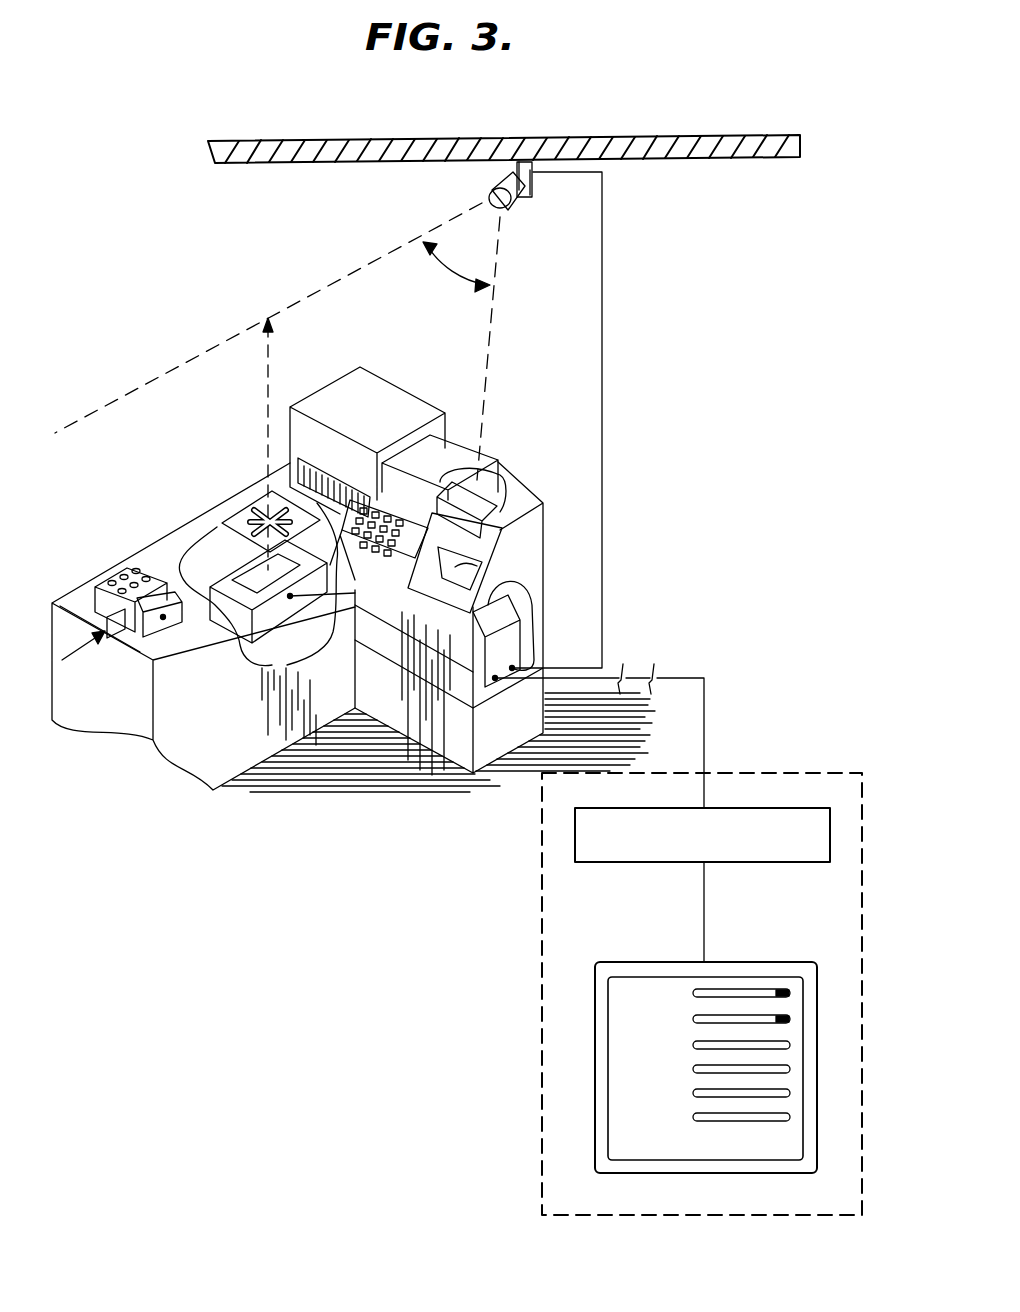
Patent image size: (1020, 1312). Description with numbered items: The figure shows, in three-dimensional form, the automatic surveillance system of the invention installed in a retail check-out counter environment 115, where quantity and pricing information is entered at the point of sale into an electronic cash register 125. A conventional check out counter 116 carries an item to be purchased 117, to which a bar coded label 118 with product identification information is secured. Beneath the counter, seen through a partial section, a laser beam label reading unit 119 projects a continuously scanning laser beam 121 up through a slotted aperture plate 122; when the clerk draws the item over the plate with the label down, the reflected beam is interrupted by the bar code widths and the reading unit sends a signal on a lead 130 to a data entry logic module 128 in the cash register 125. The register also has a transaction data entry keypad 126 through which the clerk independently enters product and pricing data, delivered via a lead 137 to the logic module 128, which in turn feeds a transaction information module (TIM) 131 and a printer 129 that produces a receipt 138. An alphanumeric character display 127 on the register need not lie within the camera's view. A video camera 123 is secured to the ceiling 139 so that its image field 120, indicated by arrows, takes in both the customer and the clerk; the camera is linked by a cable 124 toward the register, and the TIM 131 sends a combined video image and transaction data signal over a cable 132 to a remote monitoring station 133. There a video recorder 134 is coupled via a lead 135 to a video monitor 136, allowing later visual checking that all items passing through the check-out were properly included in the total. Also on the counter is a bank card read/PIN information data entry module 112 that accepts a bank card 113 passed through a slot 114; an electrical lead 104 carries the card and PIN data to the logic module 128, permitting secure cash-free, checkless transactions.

The electrical lead 104 is at (250, 673).
The bank card read/PIN information data entry module 112 is at (133, 558).
The bank card 113 is at (110, 640).
The slot 114 is at (163, 617).
The check-out counter environment 115 is at (158, 440).
The check out counter 116 is at (110, 576).
The item to be purchased 117 is at (360, 385).
The label 118 is at (309, 455).
The laser beam label reading unit 119 is at (192, 565).
The image field 120 is at (448, 270).
The continuously scanning laser beam 121 is at (268, 392).
The slotted aperture plate 122 is at (232, 520).
The video camera 123 is at (513, 207).
The camera cable 124 is at (602, 183).
The electronic cash register 125 is at (528, 530).
The transaction data entry keypad 126 is at (448, 440).
The alphanumeric character display 127 is at (470, 497).
The data entry logic module 128 is at (403, 592).
The printer 129 is at (513, 634).
The lead 130 is at (328, 598).
The transaction information module (TIM) 131 is at (473, 673).
The video cable 132 is at (618, 676).
The remote monitoring station 133 is at (760, 770).
The video recorder 134 is at (585, 862).
The lead 135 is at (705, 903).
The video monitor 136 is at (595, 990).
The lead 137 is at (432, 582).
The receipt 138 is at (465, 567).
The ceiling 139 is at (733, 162).